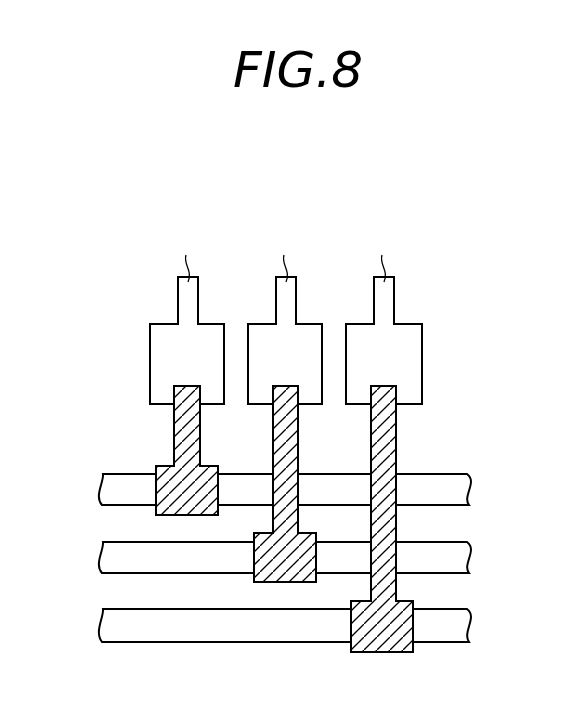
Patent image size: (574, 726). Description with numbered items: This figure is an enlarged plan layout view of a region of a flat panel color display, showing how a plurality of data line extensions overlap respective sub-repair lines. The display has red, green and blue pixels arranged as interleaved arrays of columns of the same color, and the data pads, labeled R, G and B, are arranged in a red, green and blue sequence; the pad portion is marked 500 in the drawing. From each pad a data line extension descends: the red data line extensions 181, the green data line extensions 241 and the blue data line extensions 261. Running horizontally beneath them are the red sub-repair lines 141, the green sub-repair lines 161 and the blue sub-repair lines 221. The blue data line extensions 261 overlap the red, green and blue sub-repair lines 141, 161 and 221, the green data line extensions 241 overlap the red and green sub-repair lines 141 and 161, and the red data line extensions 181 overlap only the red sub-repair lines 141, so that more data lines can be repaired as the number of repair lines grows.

The pad electrode unit 500 is at (387, 300).
The red sub-repair lines 141 is at (100, 490).
The green sub-repair lines 161 is at (100, 558).
The blue sub-repair lines 221 is at (100, 623).
The red data line extensions 181 is at (178, 437).
The green data line extensions 241 is at (287, 425).
The blue data line extensions 261 is at (383, 452).